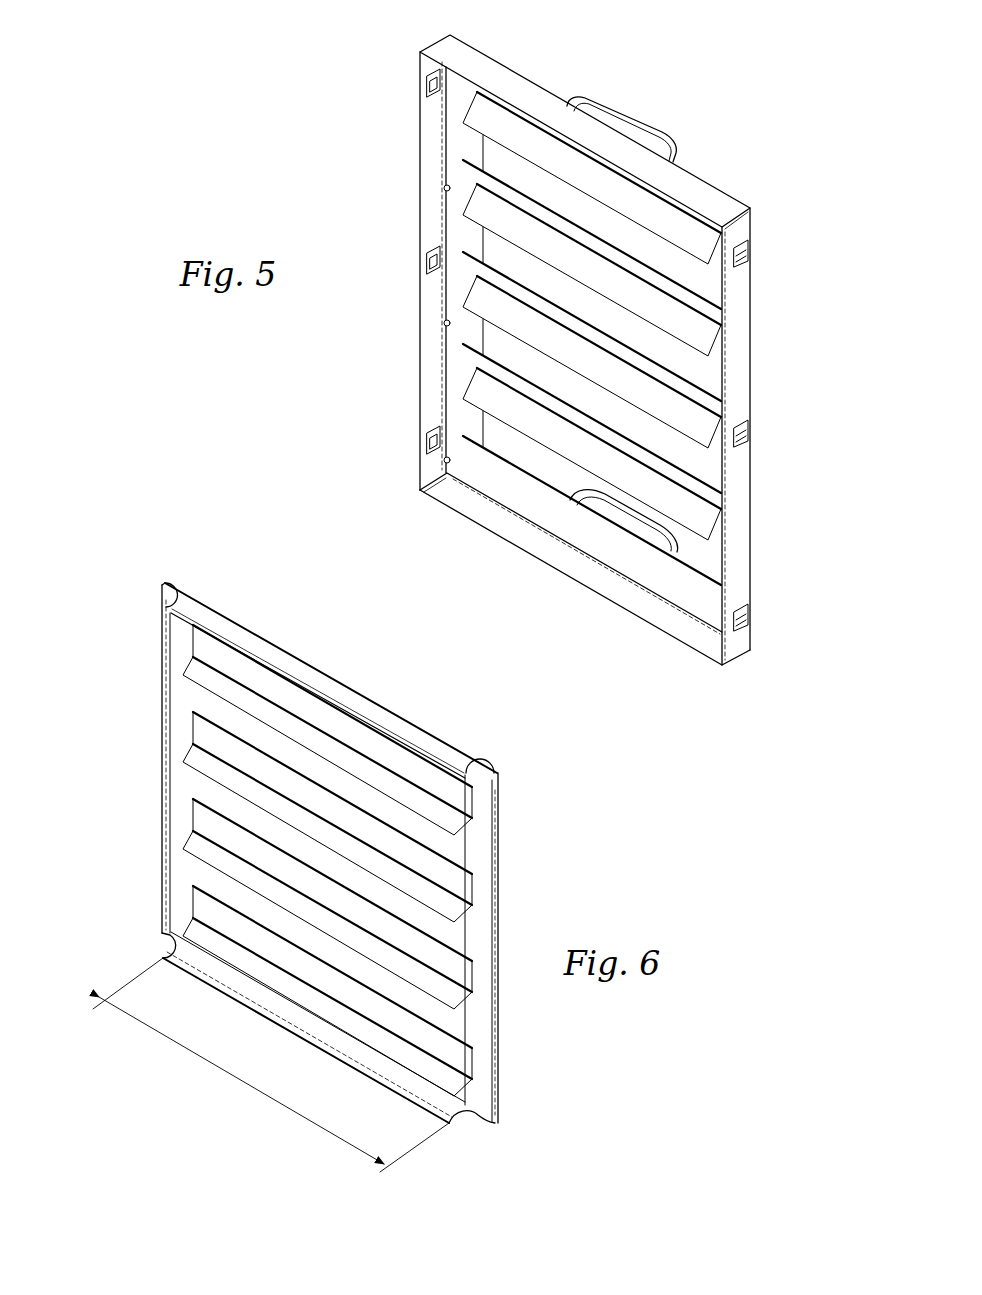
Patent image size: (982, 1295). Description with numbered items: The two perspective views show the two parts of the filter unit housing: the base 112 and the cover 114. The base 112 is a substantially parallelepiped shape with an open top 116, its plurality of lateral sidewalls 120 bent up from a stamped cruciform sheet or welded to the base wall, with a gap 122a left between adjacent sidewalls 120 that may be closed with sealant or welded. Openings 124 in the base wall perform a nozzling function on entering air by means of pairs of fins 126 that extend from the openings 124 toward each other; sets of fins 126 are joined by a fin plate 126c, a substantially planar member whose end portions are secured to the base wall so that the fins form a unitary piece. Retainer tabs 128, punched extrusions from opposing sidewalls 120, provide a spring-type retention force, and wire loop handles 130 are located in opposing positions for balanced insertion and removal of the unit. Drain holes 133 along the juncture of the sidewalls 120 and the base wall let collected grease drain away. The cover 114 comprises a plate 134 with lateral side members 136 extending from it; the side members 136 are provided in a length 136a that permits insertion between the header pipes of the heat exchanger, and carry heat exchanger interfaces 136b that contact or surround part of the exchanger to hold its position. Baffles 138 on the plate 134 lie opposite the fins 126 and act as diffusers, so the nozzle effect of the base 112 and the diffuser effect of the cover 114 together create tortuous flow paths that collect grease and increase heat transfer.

In FIG. 5, the base 112 is at (724, 87).
In FIG. 6, the cover 114 is at (352, 660).
In FIG. 5, the open top 116 is at (517, 548).
In FIG. 5, the lateral sidewalls 120 is at (431, 130).
In FIG. 5, the gap 122a is at (754, 226).
In FIG. 5, the openings 124 is at (710, 282).
In FIG. 5, the fins 126 is at (688, 240).
In FIG. 5, the fin plate 126c is at (503, 292).
In FIG. 5, the retainer tabs 128 is at (427, 78).
In FIG. 5, the handles 130 is at (637, 95).
In FIG. 5, the drain holes 133 is at (443, 187).
In FIG. 6, the plate 134 is at (480, 848).
In FIG. 6, the lateral side members 136 is at (243, 640).
In FIG. 6, the length 136a is at (242, 1081).
In FIG. 6, the heat exchanger interfaces 136b is at (163, 600).
In FIG. 6, the baffles 138 is at (463, 802).